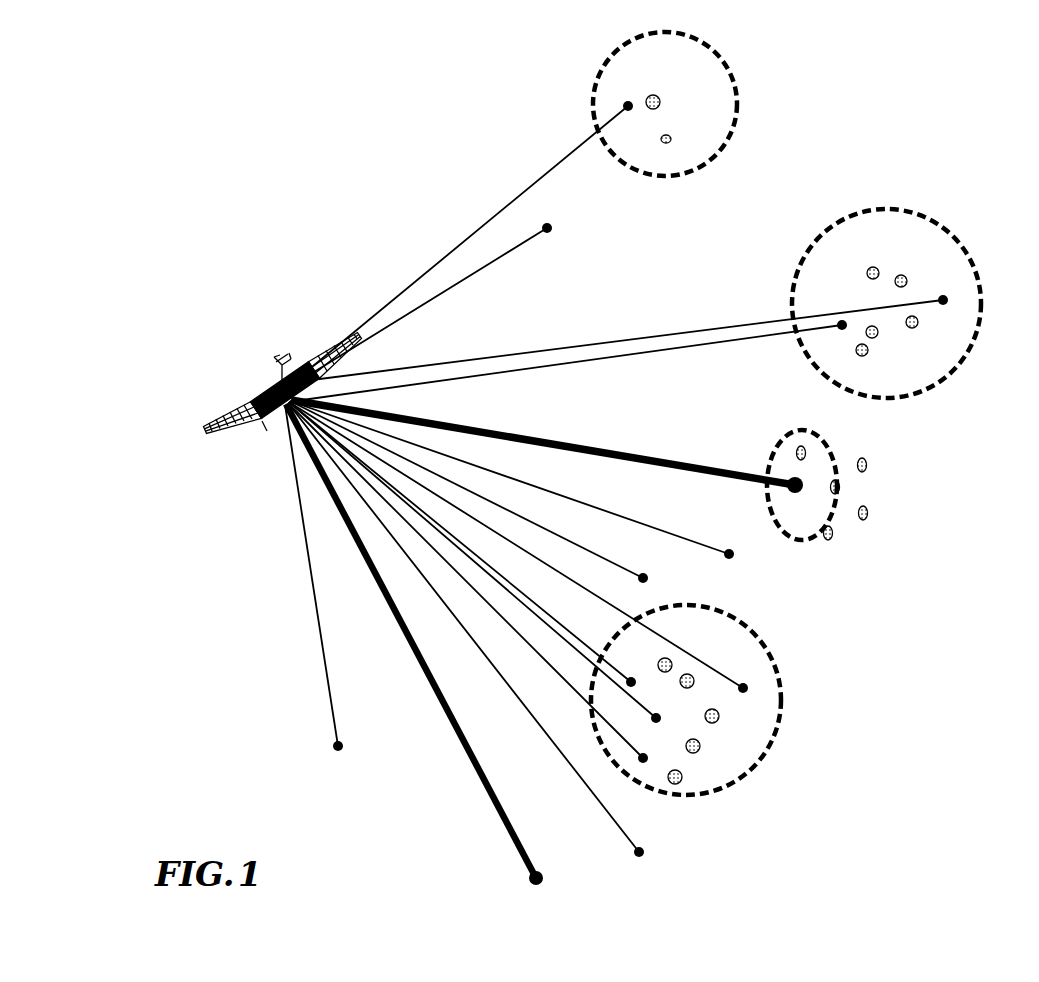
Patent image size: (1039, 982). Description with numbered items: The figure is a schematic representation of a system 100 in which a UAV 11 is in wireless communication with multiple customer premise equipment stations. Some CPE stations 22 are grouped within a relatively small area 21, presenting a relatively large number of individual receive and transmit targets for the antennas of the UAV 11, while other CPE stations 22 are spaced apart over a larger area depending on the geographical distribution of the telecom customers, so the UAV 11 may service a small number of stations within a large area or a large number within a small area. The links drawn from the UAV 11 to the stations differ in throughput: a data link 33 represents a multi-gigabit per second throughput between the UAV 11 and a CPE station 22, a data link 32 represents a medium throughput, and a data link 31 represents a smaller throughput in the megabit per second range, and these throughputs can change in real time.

The satellite communication system 100 is at (201, 243).
The UAV 11 is at (263, 401).
The relatively small area 21 is at (737, 87).
The CPE station 22 is at (912, 328).
The data link 31 is at (543, 366).
The data link 32 is at (494, 803).
The data link 33 is at (644, 456).